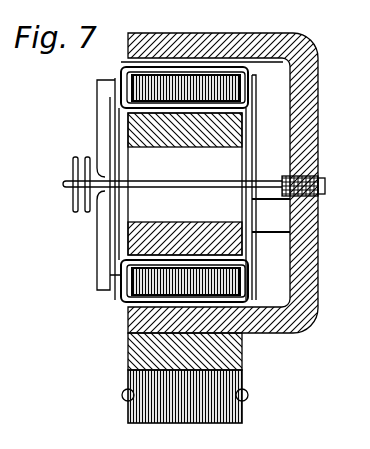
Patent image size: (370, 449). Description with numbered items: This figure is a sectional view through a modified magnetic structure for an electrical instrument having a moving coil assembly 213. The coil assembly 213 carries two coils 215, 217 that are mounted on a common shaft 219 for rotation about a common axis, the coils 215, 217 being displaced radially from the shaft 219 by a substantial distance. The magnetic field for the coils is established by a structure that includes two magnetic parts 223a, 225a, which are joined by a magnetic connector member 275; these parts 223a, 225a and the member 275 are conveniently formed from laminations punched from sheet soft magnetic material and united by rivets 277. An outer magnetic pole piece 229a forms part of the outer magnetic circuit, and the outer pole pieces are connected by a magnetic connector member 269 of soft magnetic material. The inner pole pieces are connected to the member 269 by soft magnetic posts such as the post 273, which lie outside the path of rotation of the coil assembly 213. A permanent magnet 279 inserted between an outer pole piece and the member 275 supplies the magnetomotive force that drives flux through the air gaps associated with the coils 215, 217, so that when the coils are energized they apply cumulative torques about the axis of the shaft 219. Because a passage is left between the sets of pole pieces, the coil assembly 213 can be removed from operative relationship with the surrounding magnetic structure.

The moving coil assembly 213 is at (97, 115).
The coil 215 is at (121, 70).
The coil 217 is at (124, 302).
The shaft 219 is at (272, 172).
The magnetic part 223a is at (131, 88).
The magnetic part 225a is at (130, 283).
The outer magnetic pole piece 229a is at (250, 62).
The magnetic connector member 269 is at (318, 238).
The soft magnetic post 273 is at (287, 221).
The magnetic connector member 275 is at (125, 397).
The rivet 277 is at (246, 397).
The permanent magnet 279 is at (143, 349).